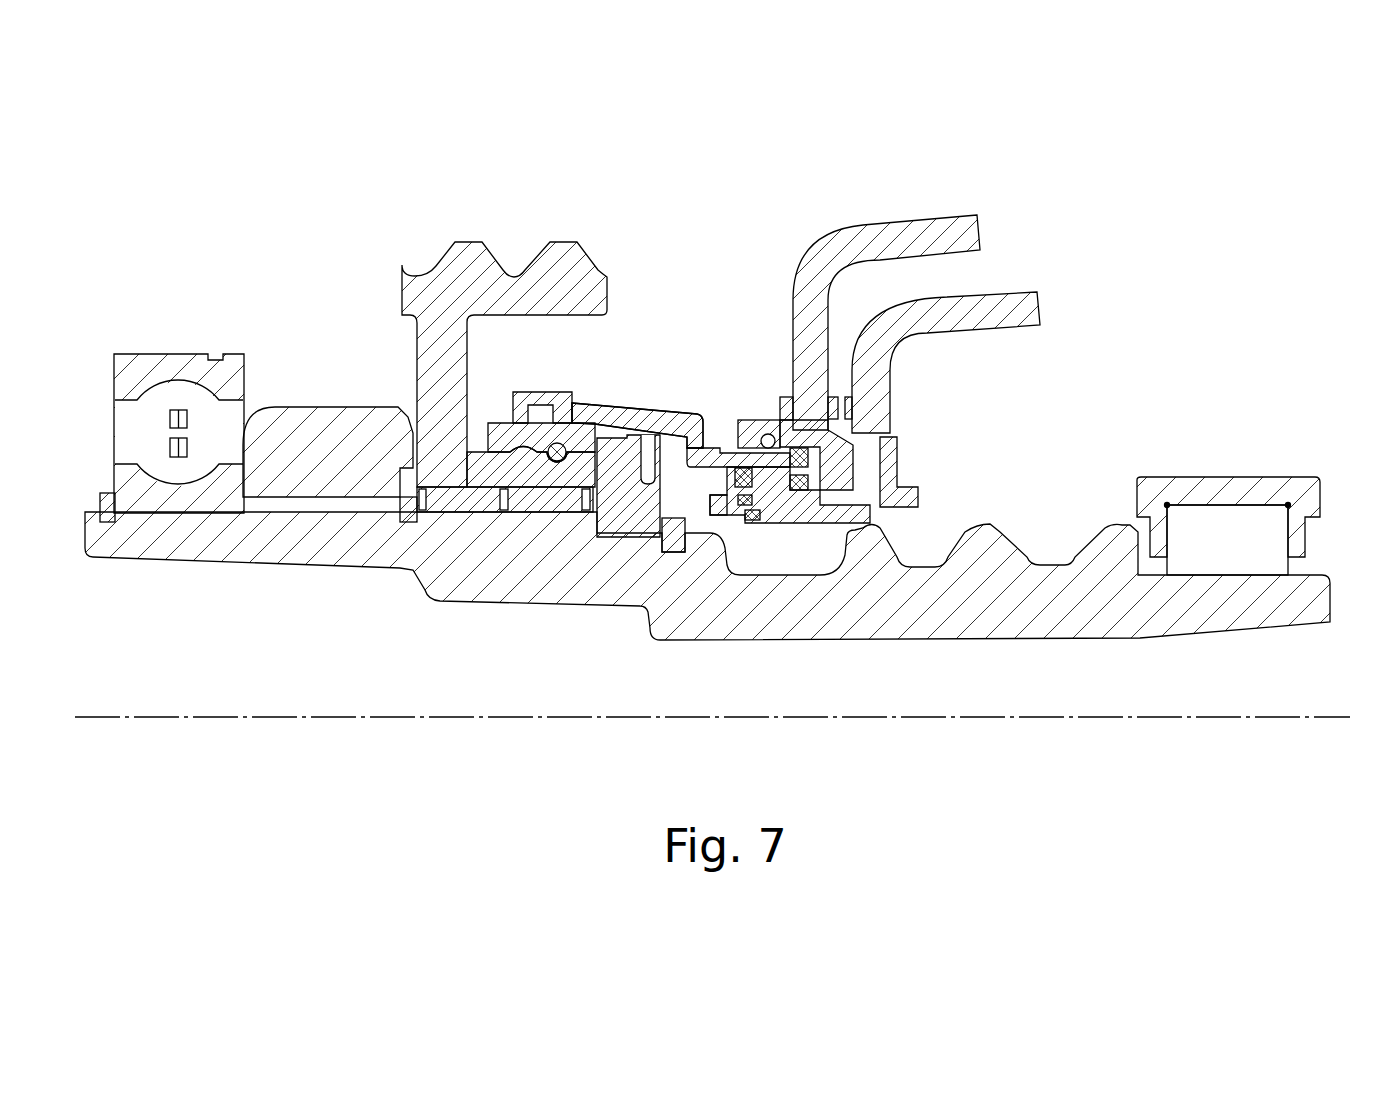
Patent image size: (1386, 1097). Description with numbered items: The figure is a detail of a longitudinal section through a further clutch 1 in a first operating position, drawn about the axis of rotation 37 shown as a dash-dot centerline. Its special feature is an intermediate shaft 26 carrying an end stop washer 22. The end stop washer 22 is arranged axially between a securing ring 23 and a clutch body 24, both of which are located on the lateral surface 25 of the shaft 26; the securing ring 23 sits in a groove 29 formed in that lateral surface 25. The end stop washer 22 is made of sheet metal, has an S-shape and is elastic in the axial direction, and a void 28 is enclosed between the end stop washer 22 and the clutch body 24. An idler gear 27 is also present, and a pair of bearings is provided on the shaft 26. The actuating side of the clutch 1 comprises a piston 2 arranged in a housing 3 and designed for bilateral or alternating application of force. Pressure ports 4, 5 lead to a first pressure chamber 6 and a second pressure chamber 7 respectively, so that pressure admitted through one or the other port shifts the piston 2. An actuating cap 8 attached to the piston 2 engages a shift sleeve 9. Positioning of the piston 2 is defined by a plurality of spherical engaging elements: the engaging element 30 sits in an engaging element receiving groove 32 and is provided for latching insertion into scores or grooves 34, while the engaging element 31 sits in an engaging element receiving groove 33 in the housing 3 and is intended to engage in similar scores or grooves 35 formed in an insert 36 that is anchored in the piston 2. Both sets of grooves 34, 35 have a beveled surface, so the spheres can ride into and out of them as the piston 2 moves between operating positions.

The clutch 1 is at (953, 100).
The piston 2 is at (712, 452).
The housing 3 is at (890, 447).
The pressure port 4 is at (905, 233).
The pressure port 5 is at (980, 310).
The first pressure chamber 6 is at (887, 463).
The second pressure chamber 7 is at (780, 497).
The actuating cap 8 is at (605, 416).
The shift sleeve 9 is at (497, 430).
The end stop washer 22 is at (622, 478).
The securing ring 23 is at (645, 500).
The clutch body 24 is at (553, 490).
The lateral surface 25 is at (705, 522).
The intermediate shaft 26 is at (873, 600).
The idler gear 27 is at (522, 290).
The void 28 is at (588, 513).
The groove 29 is at (683, 570).
The engaging element 30 is at (637, 418).
The engaging element 31 is at (777, 408).
The engaging element receiving groove 32 is at (548, 512).
The engaging element receiving groove 33 is at (763, 424).
The grooves 34 is at (518, 448).
The grooves 35 is at (780, 430).
The insert 36 is at (735, 448).
The axis of rotation 37 is at (1290, 710).